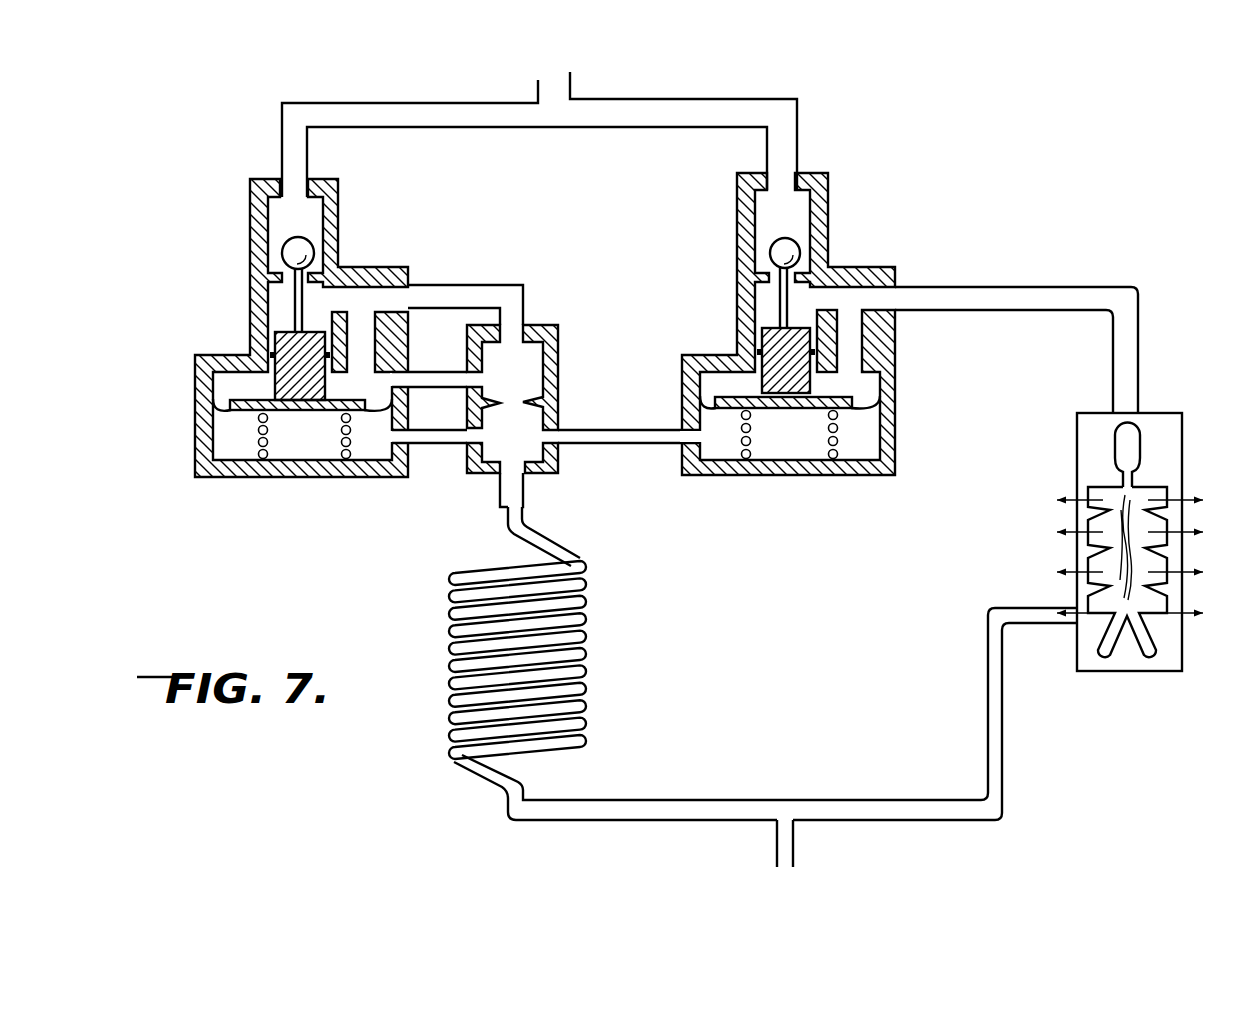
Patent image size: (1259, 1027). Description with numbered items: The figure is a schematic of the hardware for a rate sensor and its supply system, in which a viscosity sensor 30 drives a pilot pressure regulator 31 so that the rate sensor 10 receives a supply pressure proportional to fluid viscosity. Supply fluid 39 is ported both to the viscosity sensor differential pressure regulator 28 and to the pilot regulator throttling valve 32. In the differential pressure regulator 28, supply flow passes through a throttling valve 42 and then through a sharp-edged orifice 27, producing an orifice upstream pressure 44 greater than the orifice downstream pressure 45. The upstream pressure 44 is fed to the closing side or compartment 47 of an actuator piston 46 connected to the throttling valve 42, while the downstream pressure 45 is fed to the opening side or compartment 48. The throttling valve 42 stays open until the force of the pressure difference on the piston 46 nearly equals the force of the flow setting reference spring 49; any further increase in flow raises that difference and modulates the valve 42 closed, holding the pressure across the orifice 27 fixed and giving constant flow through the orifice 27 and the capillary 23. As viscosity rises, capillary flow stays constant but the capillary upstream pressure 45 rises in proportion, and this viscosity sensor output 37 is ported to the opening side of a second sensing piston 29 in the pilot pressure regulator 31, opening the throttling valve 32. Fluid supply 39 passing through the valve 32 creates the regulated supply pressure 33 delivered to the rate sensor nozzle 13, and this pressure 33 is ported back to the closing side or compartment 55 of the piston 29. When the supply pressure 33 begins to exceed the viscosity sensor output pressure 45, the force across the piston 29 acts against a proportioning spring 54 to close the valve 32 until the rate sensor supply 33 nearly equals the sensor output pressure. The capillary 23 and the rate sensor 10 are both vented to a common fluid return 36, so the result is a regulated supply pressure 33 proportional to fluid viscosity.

The rate sensor 10 is at (1158, 541).
The rate sensor supply nozzle 13 is at (1137, 447).
The capillary 23 is at (583, 692).
The sharp-edged orifice 27 is at (528, 395).
The viscosity sensor differential pressure regulator 28 is at (272, 348).
The second sensing piston 29 is at (795, 402).
The viscosity sensor 30 is at (539, 421).
The pilot pressure regulator 31 is at (825, 337).
The throttling valve 32 is at (767, 263).
The regulated supply pressure 33 is at (1040, 287).
The fluid return 36 is at (765, 769).
The viscosity sensor output 37 is at (583, 430).
The supply fluid 39 is at (539, 106).
The throttling valve 42 is at (303, 271).
The orifice upstream pressure 44 is at (522, 355).
The orifice downstream pressure 45 is at (558, 468).
The actuator piston 46 is at (243, 413).
The closing compartment 47 is at (388, 374).
The opening compartment 48 is at (372, 447).
The flow setting reference spring 49 is at (341, 440).
The proportioning spring 54 is at (840, 445).
The closing compartment 55 is at (878, 383).